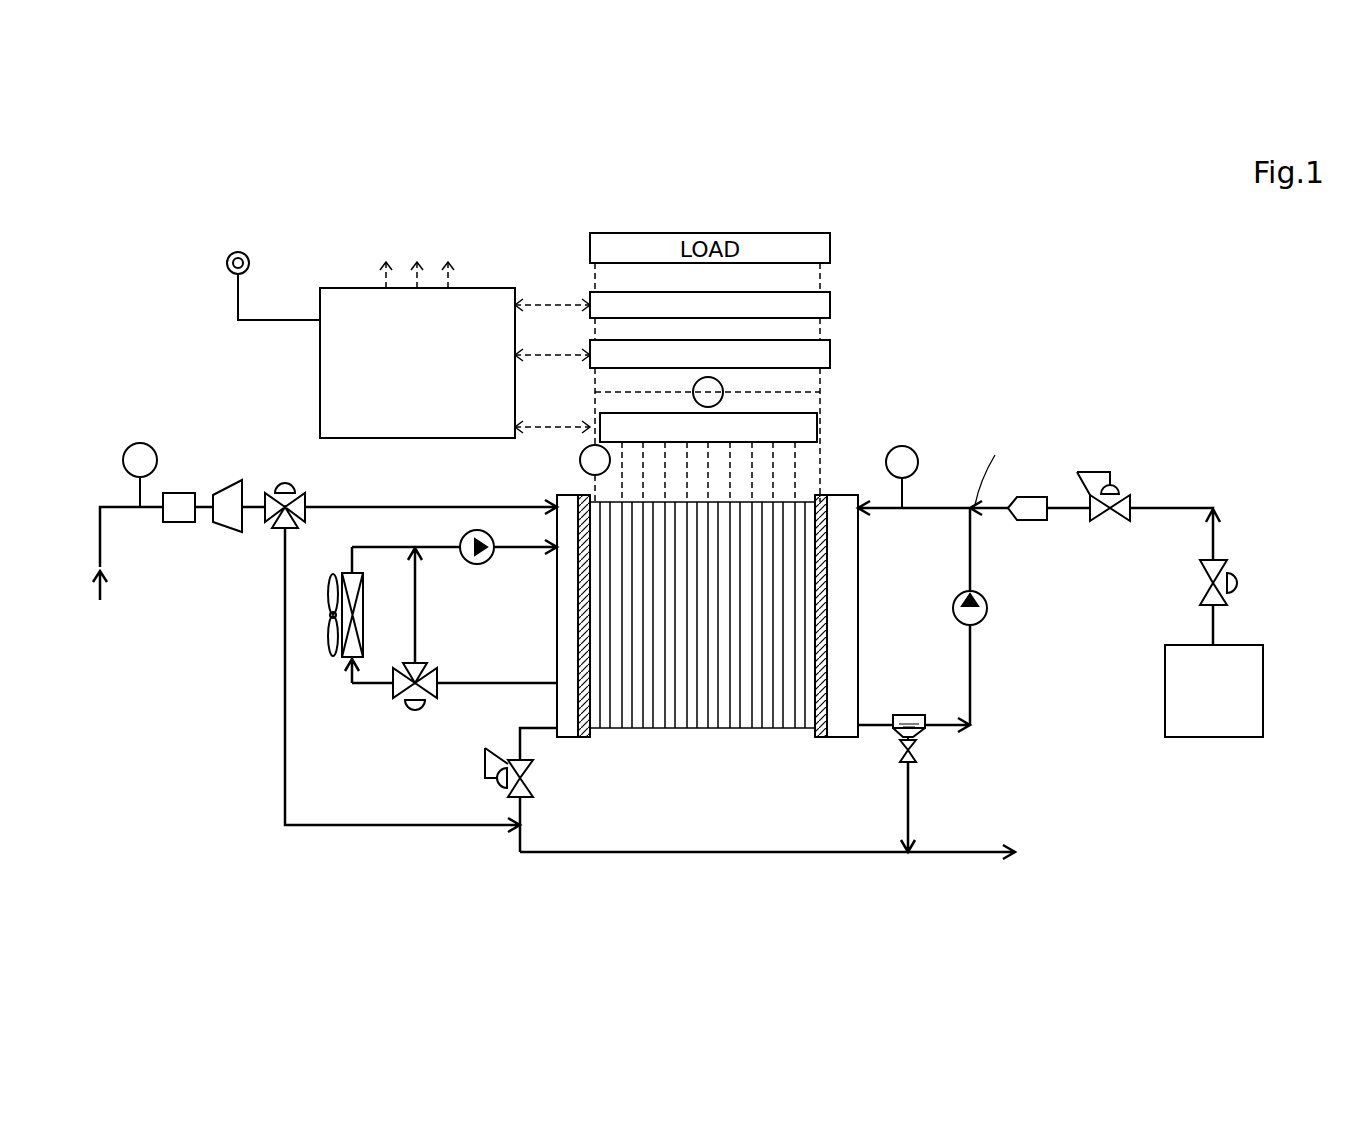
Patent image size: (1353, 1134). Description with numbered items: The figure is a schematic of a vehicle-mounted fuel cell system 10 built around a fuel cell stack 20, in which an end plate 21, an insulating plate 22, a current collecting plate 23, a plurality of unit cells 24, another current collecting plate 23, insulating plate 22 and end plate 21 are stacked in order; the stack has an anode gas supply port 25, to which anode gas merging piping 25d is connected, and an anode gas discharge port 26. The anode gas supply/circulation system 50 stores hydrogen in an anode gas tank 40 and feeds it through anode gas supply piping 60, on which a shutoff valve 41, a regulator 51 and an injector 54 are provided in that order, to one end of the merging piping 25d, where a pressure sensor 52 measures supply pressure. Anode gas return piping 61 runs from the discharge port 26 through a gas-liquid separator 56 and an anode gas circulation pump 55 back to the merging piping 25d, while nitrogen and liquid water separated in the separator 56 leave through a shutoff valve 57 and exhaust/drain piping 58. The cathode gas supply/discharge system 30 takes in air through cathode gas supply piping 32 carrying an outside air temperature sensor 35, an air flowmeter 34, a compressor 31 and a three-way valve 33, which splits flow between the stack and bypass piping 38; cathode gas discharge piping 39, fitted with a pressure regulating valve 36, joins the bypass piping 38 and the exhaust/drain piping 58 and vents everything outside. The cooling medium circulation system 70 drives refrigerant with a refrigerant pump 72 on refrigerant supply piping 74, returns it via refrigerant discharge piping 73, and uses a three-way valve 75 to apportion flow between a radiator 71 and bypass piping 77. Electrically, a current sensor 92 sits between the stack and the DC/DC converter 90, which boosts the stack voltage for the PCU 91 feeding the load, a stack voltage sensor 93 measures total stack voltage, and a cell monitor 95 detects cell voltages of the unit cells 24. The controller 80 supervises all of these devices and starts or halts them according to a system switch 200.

The fuel cell system 10 is at (1124, 294).
The fuel cell stack 20 is at (710, 672).
The end plate 21 is at (566, 740).
The insulating plate 22 is at (583, 740).
The current collecting plate 23 is at (594, 737).
The unit cell 24 is at (702, 645).
The anode gas supply port 25 is at (858, 504).
The anode gas merging piping 25d is at (968, 522).
The anode gas discharge port 26 is at (862, 723).
The cathode gas supply/discharge system 30 is at (551, 647).
The compressor 31 is at (224, 481).
The cathode gas supply piping 32 is at (101, 542).
The three-way valve 33 is at (299, 485).
The air flowmeter 34 is at (183, 493).
The outside air temperature sensor 35 is at (141, 443).
The pressure regulating valve 36 is at (497, 780).
The bypass piping 38 is at (285, 630).
The cathode gas discharge piping 39 is at (870, 855).
The anode gas tank 40 is at (1232, 645).
The shutoff valve 41 is at (1204, 584).
The anode gas supply/circulation system 50 is at (1063, 639).
The regulator 51 is at (1134, 492).
The pressure sensor 52 is at (919, 460).
The injector 54 is at (1030, 496).
The anode gas circulation pump 55 is at (953, 608).
The gas-liquid separator 56 is at (918, 740).
The shutoff valve 57 is at (914, 762).
The exhaust/drain piping 58 is at (912, 792).
The anode gas supply piping 60 is at (1216, 540).
The anode gas return piping 61 is at (940, 722).
The cooling medium circulation system 70 is at (428, 643).
The radiator 71 is at (345, 573).
The refrigerant pump 72 is at (489, 565).
The refrigerant discharge piping 73 is at (505, 683).
The refrigerant supply piping 74 is at (515, 553).
The three-way valve 75 is at (415, 710).
The bypass piping 77 is at (416, 608).
The controller 80 is at (320, 360).
The DC/DC converter 90 is at (830, 352).
The power control unit 91 is at (830, 305).
The current sensor 92 is at (580, 460).
The stack voltage sensor 93 is at (723, 384).
The cell monitor 95 is at (817, 427).
The system switch 200 is at (268, 247).